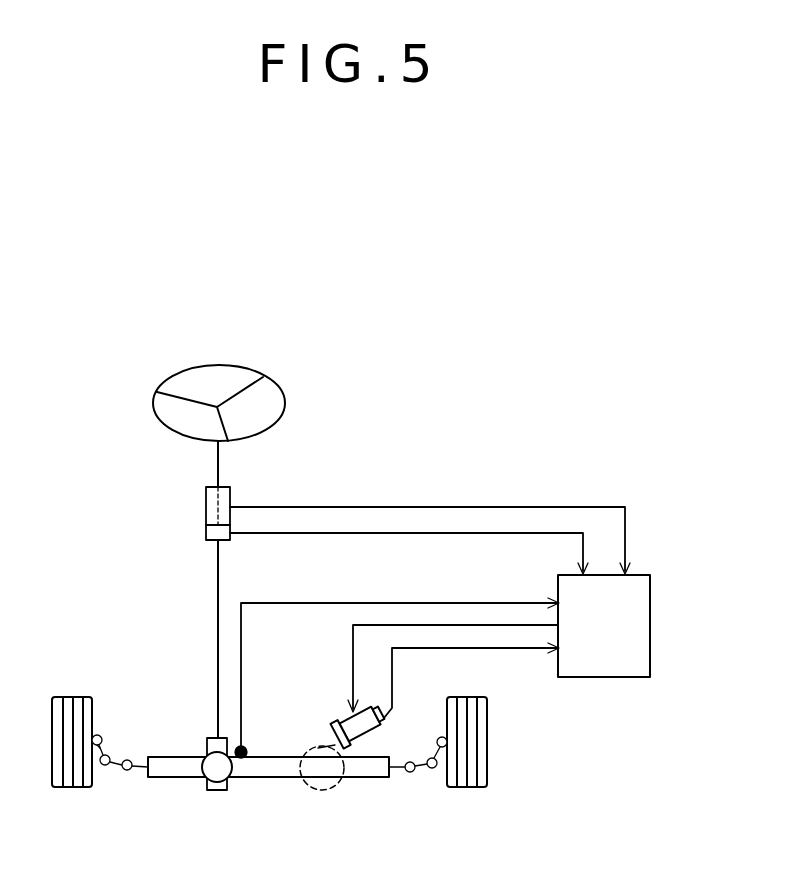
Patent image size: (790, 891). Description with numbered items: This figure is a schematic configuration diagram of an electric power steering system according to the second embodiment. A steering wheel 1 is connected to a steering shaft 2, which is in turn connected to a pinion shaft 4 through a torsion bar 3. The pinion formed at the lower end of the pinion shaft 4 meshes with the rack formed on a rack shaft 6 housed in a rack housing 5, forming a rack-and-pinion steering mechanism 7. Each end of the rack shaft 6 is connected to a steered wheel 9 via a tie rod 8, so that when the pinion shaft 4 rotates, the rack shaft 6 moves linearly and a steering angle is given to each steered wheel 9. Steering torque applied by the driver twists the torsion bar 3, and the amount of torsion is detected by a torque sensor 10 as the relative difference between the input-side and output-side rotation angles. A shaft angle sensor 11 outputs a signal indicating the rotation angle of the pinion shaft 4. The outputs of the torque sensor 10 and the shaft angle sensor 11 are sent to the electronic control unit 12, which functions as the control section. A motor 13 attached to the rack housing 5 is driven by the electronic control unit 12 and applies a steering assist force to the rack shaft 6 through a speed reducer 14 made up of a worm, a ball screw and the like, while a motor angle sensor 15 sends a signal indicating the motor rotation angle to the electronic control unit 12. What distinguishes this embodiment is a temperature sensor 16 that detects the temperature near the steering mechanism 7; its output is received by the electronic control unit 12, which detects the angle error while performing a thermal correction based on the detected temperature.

The steering wheel 1 is at (253, 370).
The steering shaft 2 is at (218, 467).
The torsion bar 3 is at (387, 522).
The pinion shaft 4 is at (217, 600).
The rack housing 5 is at (270, 755).
The rack shaft 6 is at (140, 768).
The rack-and-pinion steering mechanism 7 is at (268, 774).
The tie rod 8 is at (118, 760).
The steered wheel 9 is at (67, 697).
The torque sensor 10 is at (230, 497).
The shaft angle sensor 11 is at (223, 540).
The electronic control unit 12 is at (638, 573).
The motor 13 is at (340, 728).
The speed reducer 14 is at (320, 790).
The motor angle sensor 15 is at (382, 718).
The temperature sensor 16 is at (247, 750).